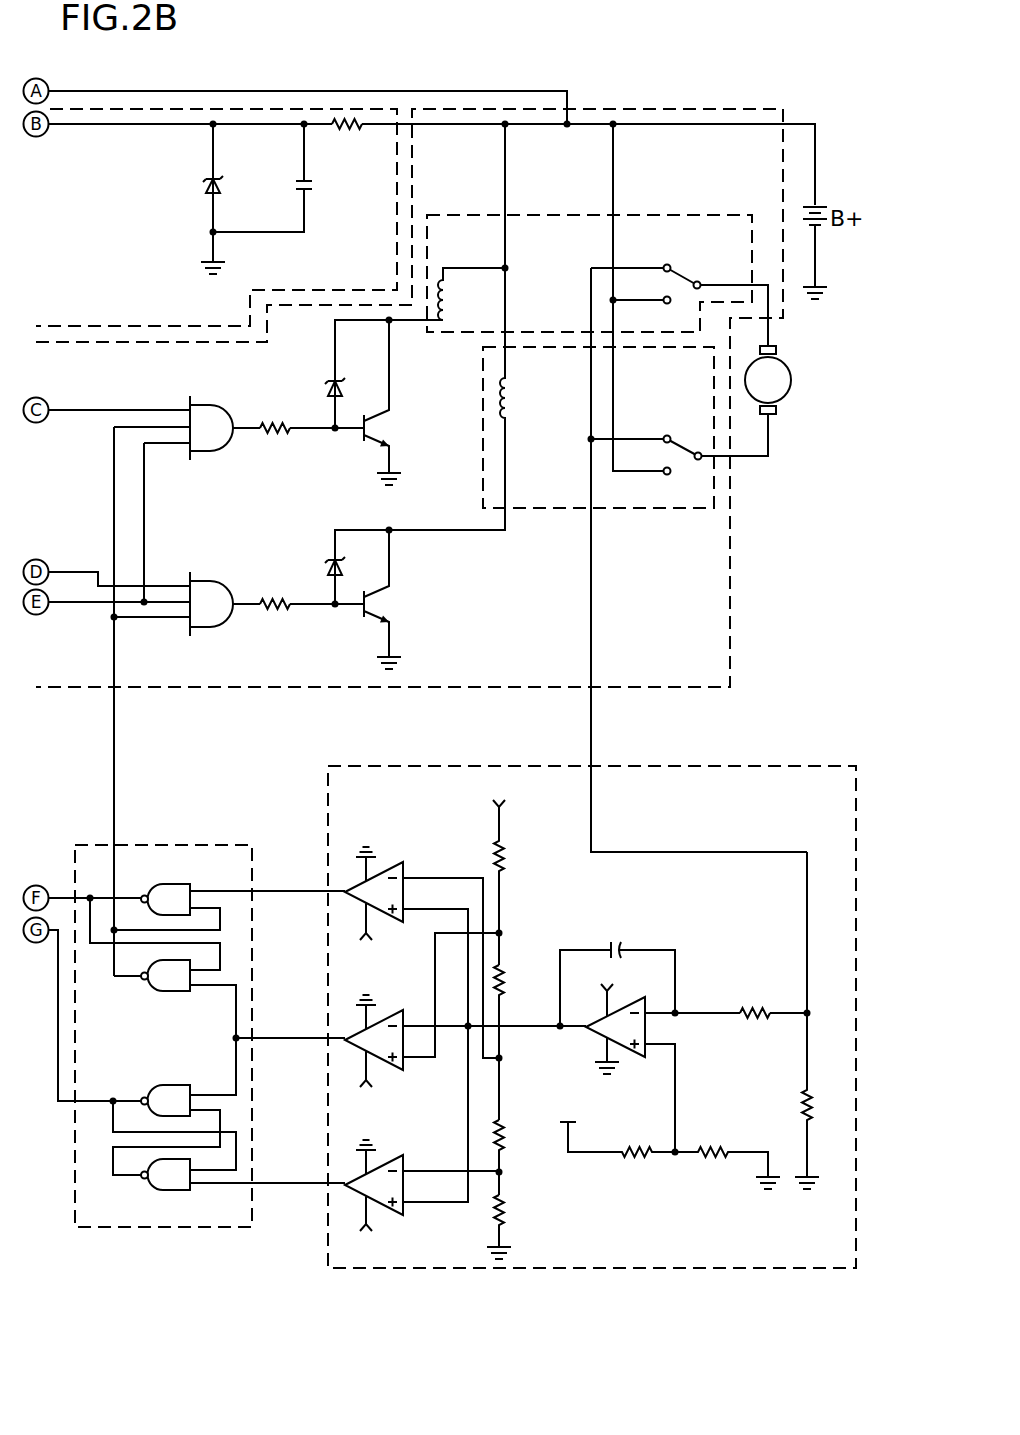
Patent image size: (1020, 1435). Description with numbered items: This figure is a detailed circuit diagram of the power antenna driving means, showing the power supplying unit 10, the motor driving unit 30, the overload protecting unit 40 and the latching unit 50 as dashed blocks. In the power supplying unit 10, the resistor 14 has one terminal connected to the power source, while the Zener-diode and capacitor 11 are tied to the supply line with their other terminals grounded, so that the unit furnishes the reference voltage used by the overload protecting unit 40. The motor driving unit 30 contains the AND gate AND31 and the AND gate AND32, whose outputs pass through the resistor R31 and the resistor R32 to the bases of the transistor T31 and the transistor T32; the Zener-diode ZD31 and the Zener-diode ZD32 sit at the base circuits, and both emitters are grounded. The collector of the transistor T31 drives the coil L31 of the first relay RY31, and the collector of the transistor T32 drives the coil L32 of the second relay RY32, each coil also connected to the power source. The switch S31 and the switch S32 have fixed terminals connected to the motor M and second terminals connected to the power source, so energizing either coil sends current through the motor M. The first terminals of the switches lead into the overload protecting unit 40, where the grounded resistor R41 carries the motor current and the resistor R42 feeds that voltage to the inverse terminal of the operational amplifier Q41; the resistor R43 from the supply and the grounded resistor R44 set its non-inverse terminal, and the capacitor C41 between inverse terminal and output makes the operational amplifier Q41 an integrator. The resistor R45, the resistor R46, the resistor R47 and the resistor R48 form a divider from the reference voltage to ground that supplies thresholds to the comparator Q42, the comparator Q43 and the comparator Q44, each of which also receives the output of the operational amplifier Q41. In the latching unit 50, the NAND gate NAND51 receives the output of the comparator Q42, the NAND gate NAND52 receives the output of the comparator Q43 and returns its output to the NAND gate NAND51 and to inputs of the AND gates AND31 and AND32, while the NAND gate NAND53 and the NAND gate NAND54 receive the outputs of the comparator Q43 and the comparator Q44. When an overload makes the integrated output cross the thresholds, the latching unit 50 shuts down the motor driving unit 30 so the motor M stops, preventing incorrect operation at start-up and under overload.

The power supplying unit 10 is at (255, 109).
The resistor 14 is at (346, 135).
The Zener-diode and capacitor 11 is at (277, 199).
The motor driving unit 30 is at (289, 688).
The overload protecting unit 40 is at (328, 826).
The latching unit 50 is at (199, 845).
The coil L31 is at (420, 348).
The coil L32 is at (444, 364).
The first relay RY31 is at (683, 213).
The second relay RY32 is at (645, 508).
The switch S31 is at (712, 287).
The switch S32 is at (712, 447).
The motor M is at (768, 380).
The AND gate AND31 is at (155, 419).
The AND gate AND32 is at (155, 595).
The resistor R31 is at (310, 417).
The resistor R32 is at (310, 593).
The Zener-diode ZD31 is at (303, 390).
The Zener-diode ZD32 is at (303, 566).
The transistor T31 is at (399, 402).
The transistor T32 is at (399, 599).
The NAND gate NAND51 is at (197, 916).
The NAND gate NAND52 is at (229, 1027).
The NAND gate NAND53 is at (143, 1052).
The NAND gate NAND54 is at (237, 1189).
The operational amplifier Q41 is at (628, 1059).
The comparator Q42 is at (397, 861).
The comparator Q43 is at (397, 1013).
The comparator Q44 is at (397, 1158).
The resistor R41 is at (788, 1020).
The resistor R42 is at (792, 1005).
The resistor R43 is at (629, 1136).
The resistor R44 is at (727, 1155).
The resistor R45 is at (521, 871).
The resistor R46 is at (529, 1042).
The resistor R47 is at (529, 1157).
The resistor R48 is at (518, 1227).
The capacitor C41 is at (617, 971).